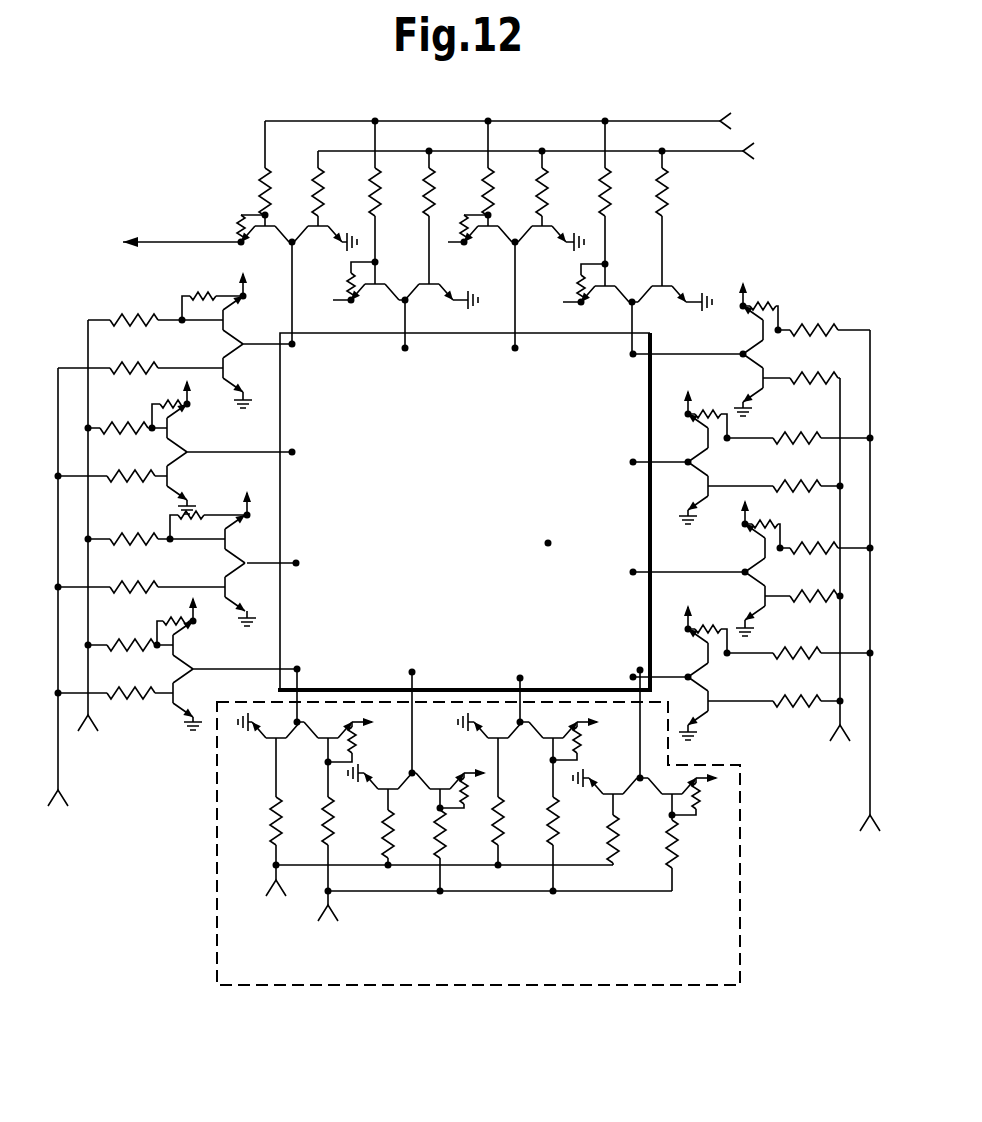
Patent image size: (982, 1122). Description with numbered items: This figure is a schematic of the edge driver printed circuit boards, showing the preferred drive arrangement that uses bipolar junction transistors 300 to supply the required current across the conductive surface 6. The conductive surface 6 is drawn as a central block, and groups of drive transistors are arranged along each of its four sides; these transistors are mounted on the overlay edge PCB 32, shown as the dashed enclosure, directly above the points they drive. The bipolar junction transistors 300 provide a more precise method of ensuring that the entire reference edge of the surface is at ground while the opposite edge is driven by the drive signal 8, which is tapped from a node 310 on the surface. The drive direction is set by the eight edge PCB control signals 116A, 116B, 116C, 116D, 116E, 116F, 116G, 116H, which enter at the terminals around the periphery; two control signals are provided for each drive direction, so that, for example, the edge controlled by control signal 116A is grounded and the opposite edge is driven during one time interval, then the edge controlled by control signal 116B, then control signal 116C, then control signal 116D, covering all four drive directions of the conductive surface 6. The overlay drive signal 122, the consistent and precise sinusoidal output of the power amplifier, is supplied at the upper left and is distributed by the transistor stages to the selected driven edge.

The conductive surface 6 is at (537, 405).
The drive signal 8 is at (300, 563).
The overlay edge PCB 32 is at (658, 956).
The overlay drive signal 122 is at (167, 240).
The bipolar junction transistors 300 is at (320, 742).
The node 310 is at (546, 547).
The control signal 116A is at (283, 902).
The control signal 116B is at (74, 616).
The control signal 116C is at (574, 159).
The control signal 116D is at (838, 583).
The control signal 116E is at (342, 932).
The control signal 116F is at (104, 548).
The control signal 116G is at (527, 124).
The control signal 116H is at (878, 599).